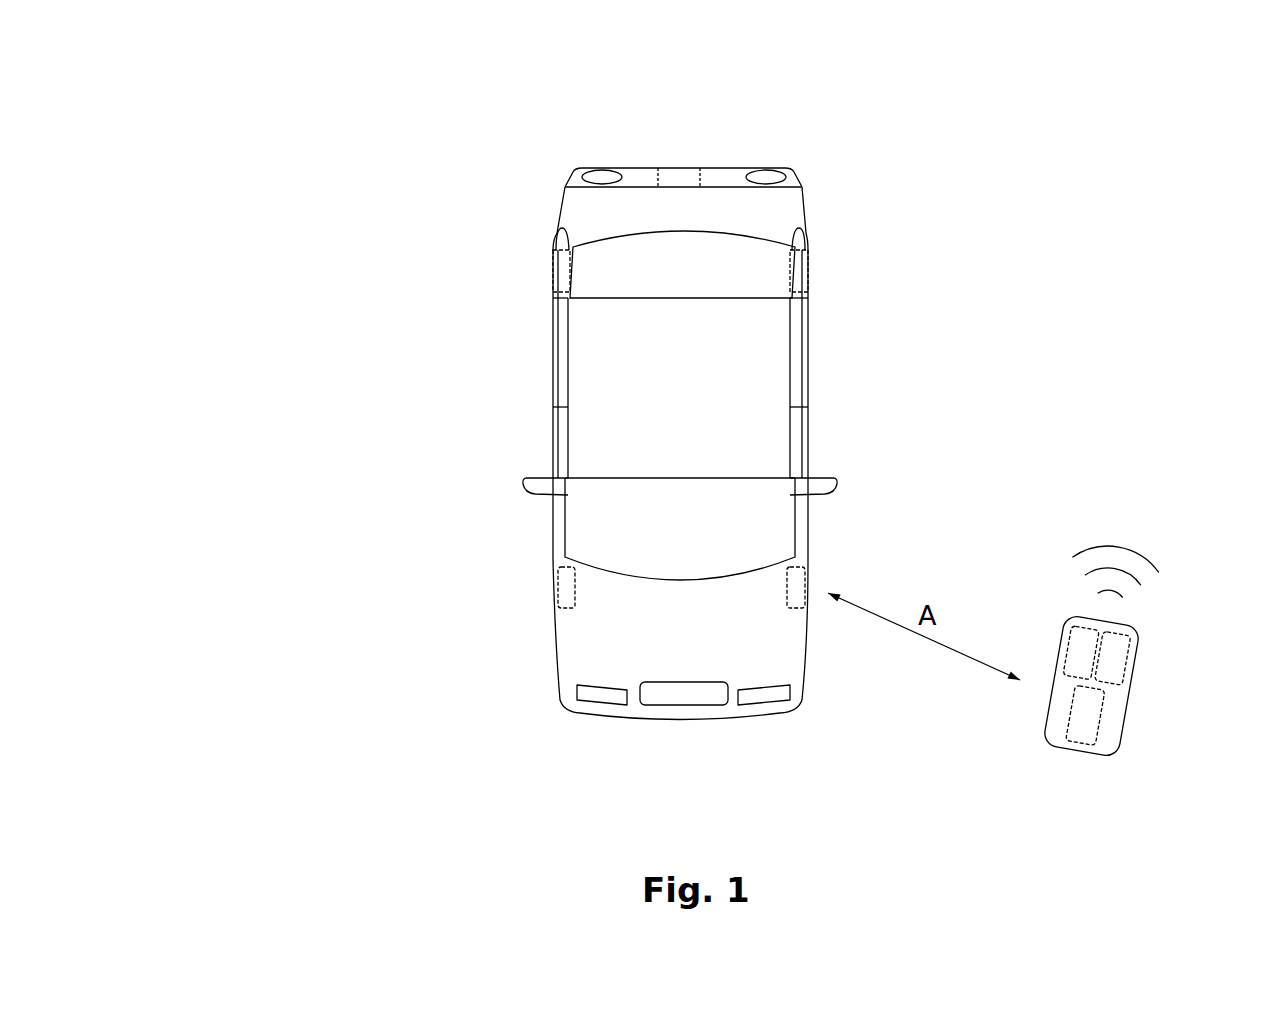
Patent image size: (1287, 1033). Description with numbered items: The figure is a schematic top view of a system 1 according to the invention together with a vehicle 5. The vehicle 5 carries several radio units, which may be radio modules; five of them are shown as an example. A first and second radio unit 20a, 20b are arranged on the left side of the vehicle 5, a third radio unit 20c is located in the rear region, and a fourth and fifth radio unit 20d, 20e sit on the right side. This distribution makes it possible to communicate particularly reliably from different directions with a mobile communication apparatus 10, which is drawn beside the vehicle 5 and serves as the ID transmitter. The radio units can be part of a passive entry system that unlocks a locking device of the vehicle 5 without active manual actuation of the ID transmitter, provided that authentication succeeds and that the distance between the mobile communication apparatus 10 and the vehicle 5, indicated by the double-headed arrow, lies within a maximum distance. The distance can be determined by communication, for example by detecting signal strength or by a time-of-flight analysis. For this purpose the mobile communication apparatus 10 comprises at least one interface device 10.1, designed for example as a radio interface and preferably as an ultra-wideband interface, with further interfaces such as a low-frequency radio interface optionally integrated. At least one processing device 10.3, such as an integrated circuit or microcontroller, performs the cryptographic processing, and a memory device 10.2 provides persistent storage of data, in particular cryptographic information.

The system 1 is at (155, 140).
The vehicle 5 is at (575, 178).
The mobile communication apparatus 10 is at (1122, 740).
The interface device 10.1 is at (1062, 658).
The memory device 10.2 is at (1130, 665).
The processing device 10.3 is at (1080, 745).
The first radio unit 20a is at (803, 643).
The second radio unit 20b is at (806, 232).
The third radio unit 20c is at (702, 178).
The fourth radio unit 20d is at (562, 232).
The fifth radio unit 20e is at (562, 622).